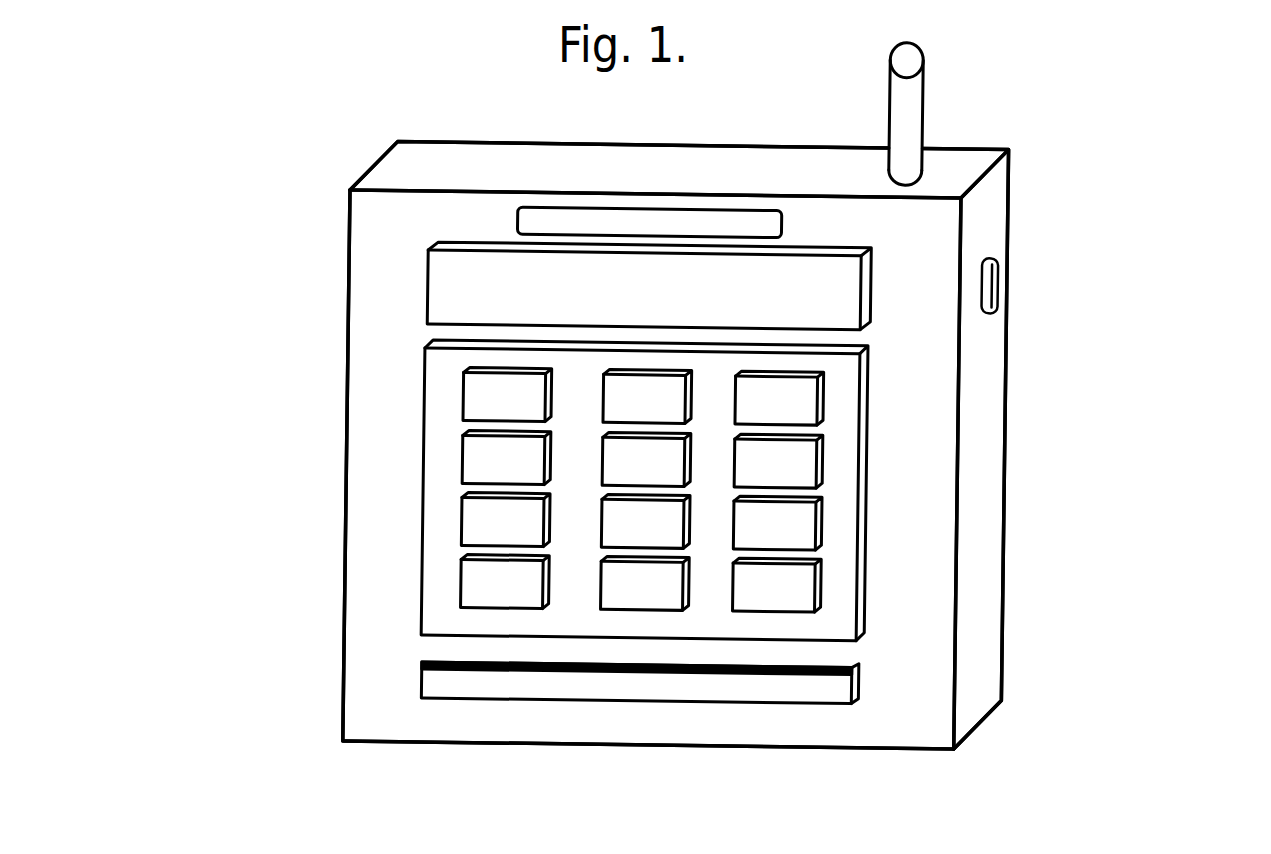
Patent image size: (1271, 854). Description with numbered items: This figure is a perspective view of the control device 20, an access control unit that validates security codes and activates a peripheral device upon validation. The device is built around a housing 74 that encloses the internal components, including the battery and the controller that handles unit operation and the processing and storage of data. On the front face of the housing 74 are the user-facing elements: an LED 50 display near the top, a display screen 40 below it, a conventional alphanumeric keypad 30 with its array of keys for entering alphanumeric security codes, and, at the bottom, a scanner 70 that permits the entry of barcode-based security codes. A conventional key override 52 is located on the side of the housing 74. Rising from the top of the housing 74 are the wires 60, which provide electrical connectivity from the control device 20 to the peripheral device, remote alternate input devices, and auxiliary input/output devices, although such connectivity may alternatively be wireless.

The control device 20 is at (1137, 489).
The housing 74 is at (440, 142).
The LED display 50 is at (570, 208).
The display screen 40 is at (428, 280).
The alphanumeric keypad 30 is at (426, 447).
The scanner 70 is at (420, 668).
The wires 60 is at (923, 102).
The key override 52 is at (992, 257).